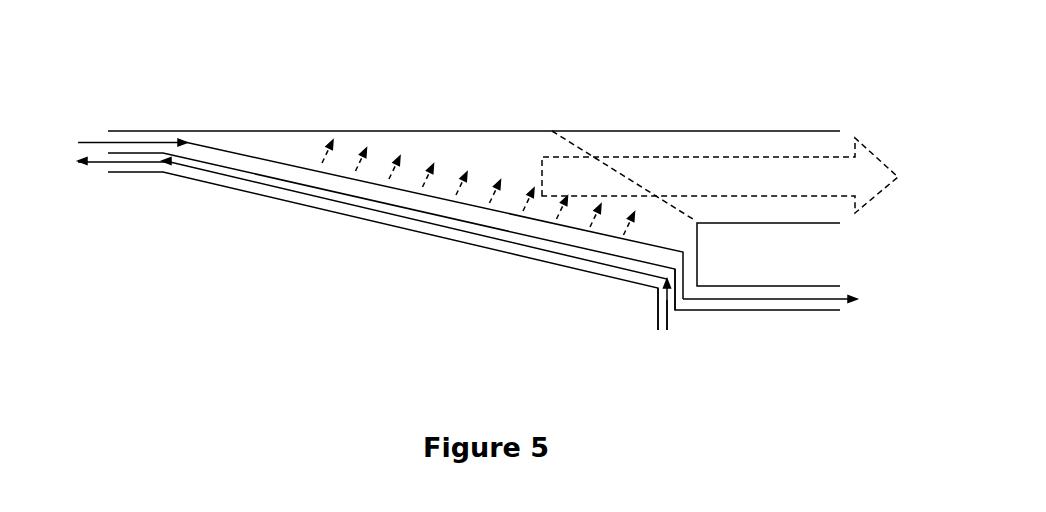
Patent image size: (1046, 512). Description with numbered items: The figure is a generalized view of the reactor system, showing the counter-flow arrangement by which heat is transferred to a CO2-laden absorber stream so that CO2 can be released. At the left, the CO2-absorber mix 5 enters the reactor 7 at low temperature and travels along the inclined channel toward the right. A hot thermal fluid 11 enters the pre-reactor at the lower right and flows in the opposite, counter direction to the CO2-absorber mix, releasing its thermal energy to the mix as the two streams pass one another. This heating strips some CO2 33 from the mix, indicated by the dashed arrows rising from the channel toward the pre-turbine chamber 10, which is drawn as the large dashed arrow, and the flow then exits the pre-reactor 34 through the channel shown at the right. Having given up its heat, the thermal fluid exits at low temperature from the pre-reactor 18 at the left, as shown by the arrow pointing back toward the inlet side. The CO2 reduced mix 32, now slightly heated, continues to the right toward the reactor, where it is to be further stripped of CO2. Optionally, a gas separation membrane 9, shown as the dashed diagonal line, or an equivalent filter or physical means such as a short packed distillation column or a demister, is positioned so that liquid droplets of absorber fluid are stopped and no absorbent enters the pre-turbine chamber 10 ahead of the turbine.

The CO2-absorber mix 5 is at (78, 142).
The reactor 7 is at (320, 128).
The gas separation membrane 9 is at (568, 140).
The pre-turbine chamber 10 is at (707, 147).
The hot thermal fluid 11 is at (667, 337).
The thermal fluid exit from pre-reactor 18 is at (80, 162).
The CO2 reduced mix 32 is at (857, 300).
The stripped CO2 33 is at (453, 175).
The pre-reactor exit 34 is at (896, 180).